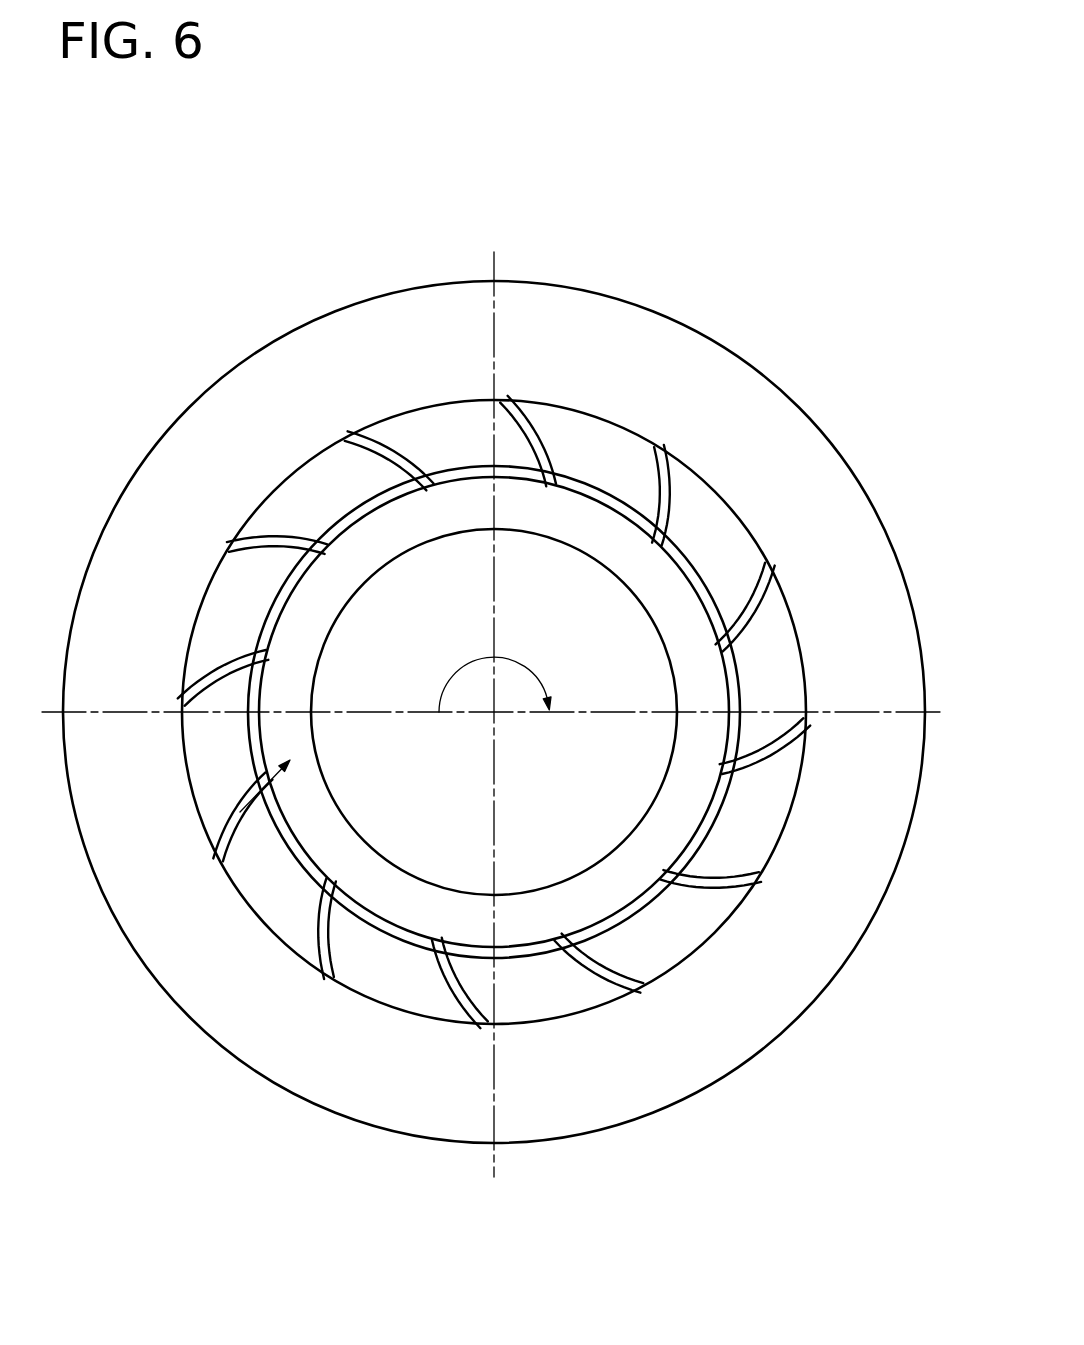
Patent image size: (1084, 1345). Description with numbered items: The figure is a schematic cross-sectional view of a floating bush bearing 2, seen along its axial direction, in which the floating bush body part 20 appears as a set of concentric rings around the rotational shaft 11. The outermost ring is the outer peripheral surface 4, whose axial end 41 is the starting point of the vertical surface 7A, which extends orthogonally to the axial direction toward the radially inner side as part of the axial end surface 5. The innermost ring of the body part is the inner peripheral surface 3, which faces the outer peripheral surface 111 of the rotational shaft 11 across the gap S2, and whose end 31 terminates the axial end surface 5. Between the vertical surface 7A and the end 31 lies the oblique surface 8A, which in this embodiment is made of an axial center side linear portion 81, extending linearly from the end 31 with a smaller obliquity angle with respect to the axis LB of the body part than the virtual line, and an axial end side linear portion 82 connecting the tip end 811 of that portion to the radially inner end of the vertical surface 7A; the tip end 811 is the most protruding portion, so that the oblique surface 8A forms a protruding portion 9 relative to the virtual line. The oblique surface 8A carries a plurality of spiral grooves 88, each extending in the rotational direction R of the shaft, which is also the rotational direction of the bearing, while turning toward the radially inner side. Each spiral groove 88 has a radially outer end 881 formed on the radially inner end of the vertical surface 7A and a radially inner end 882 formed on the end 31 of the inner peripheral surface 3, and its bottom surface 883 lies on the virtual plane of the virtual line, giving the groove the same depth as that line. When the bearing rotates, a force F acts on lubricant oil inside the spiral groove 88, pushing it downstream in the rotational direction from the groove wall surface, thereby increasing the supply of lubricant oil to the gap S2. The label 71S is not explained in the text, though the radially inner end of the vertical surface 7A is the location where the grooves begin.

The floating bush bearing 2 is at (162, 147).
The floating bush body part 20 is at (277, 338).
The outer peripheral surface 4 is at (367, 302).
The end of the outer peripheral surface 41 is at (742, 368).
The axial end surface 5 is at (531, 315).
The vertical surface 7A is at (580, 329).
The shroud surface 71S is at (714, 496).
The inner peripheral surface 3 is at (468, 477).
The end of the inner peripheral surface 31 is at (733, 662).
The rotational shaft 11 is at (388, 540).
The outer peripheral surface of the rotational shaft 111 is at (330, 582).
The gap S2 is at (314, 606).
The protruding portion 9 is at (640, 457).
The oblique surface 8A is at (693, 252).
The axial center side linear portion 81 is at (580, 483).
The axial end side linear portion 82 is at (613, 460).
The tip end of the axial center side linear portion 811 is at (702, 575).
The spiral groove 88 is at (221, 838).
The end of the spiral groove 881 is at (330, 977).
The other end of the spiral groove 882 is at (323, 953).
The bottom surface of the spiral groove 883 is at (333, 935).
The rotational direction R is at (464, 675).
The force F is at (247, 796).
The axis of the floating bush body part LB is at (494, 712).